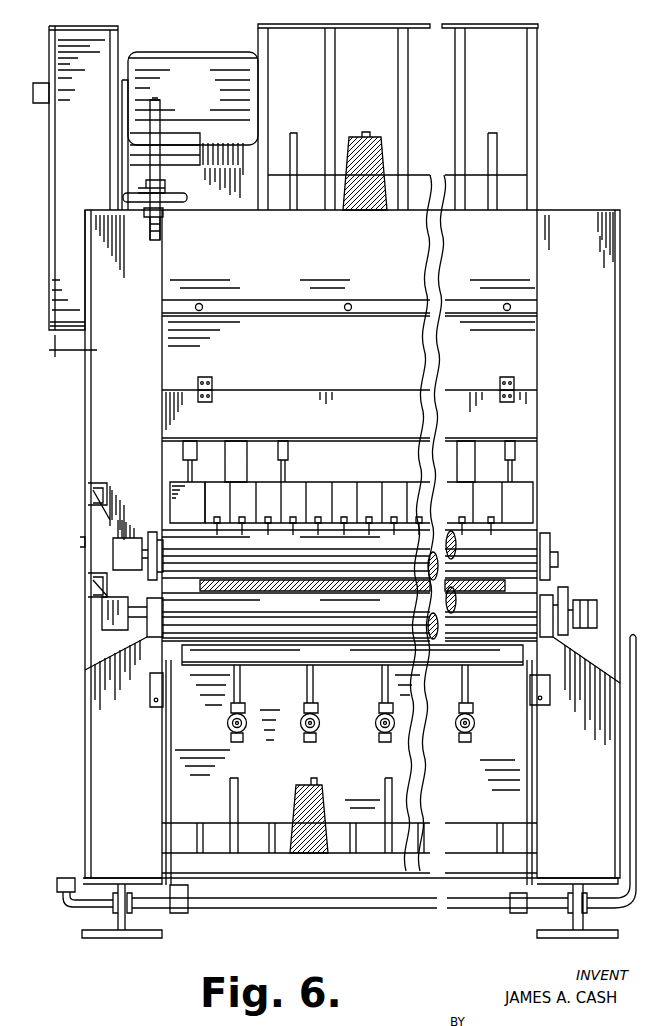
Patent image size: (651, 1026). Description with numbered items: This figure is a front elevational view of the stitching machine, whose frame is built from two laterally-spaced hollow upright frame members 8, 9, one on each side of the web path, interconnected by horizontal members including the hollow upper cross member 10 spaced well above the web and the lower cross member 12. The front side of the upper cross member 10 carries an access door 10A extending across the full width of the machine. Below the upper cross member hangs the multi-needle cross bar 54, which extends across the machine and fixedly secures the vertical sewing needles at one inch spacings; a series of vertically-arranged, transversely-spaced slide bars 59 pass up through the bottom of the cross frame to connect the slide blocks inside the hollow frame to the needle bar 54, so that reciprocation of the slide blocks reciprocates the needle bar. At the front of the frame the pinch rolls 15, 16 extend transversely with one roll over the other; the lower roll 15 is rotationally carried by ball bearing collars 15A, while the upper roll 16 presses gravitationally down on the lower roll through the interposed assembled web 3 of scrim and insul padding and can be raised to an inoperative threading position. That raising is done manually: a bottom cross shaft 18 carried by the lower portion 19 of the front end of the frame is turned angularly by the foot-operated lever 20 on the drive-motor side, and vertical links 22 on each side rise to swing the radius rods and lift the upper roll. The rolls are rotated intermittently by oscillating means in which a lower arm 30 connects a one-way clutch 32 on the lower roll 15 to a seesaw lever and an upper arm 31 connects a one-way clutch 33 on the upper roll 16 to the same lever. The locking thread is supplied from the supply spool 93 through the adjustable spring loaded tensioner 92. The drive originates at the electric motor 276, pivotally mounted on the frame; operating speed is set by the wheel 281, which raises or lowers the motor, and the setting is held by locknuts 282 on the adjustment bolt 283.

The assembled web 3 is at (310, 590).
The upright frame member 8 is at (129, 361).
The upright frame member 9 is at (586, 361).
The upper cross member 10 is at (350, 267).
The access door 10A is at (362, 361).
The lower cross member 12 is at (222, 865).
The lower roll 15 is at (373, 614).
The ball bearing collars 15A is at (547, 600).
The upper roll 16 is at (373, 554).
The bottom cross shaft 18 is at (343, 902).
The lower portion of the front end of the frame 19 is at (128, 921).
The foot-operated lever 20 is at (60, 893).
The vertical link 22 is at (172, 722).
The lower arm 30 is at (90, 597).
The upper arm 31 is at (90, 505).
The one-way clutch 32 is at (108, 627).
The one-way clutch 33 is at (125, 538).
The multi-needle cross bar 54 is at (196, 482).
The slide bar 59 is at (230, 474).
The adjustable spring loaded tensioner 92 is at (322, 728).
The locking thread supply spool 93 is at (330, 783).
The electric motor 276 is at (202, 98).
The wheel 281 is at (187, 198).
The locknuts 282 is at (165, 185).
The adjustment bolt 283 is at (150, 229).